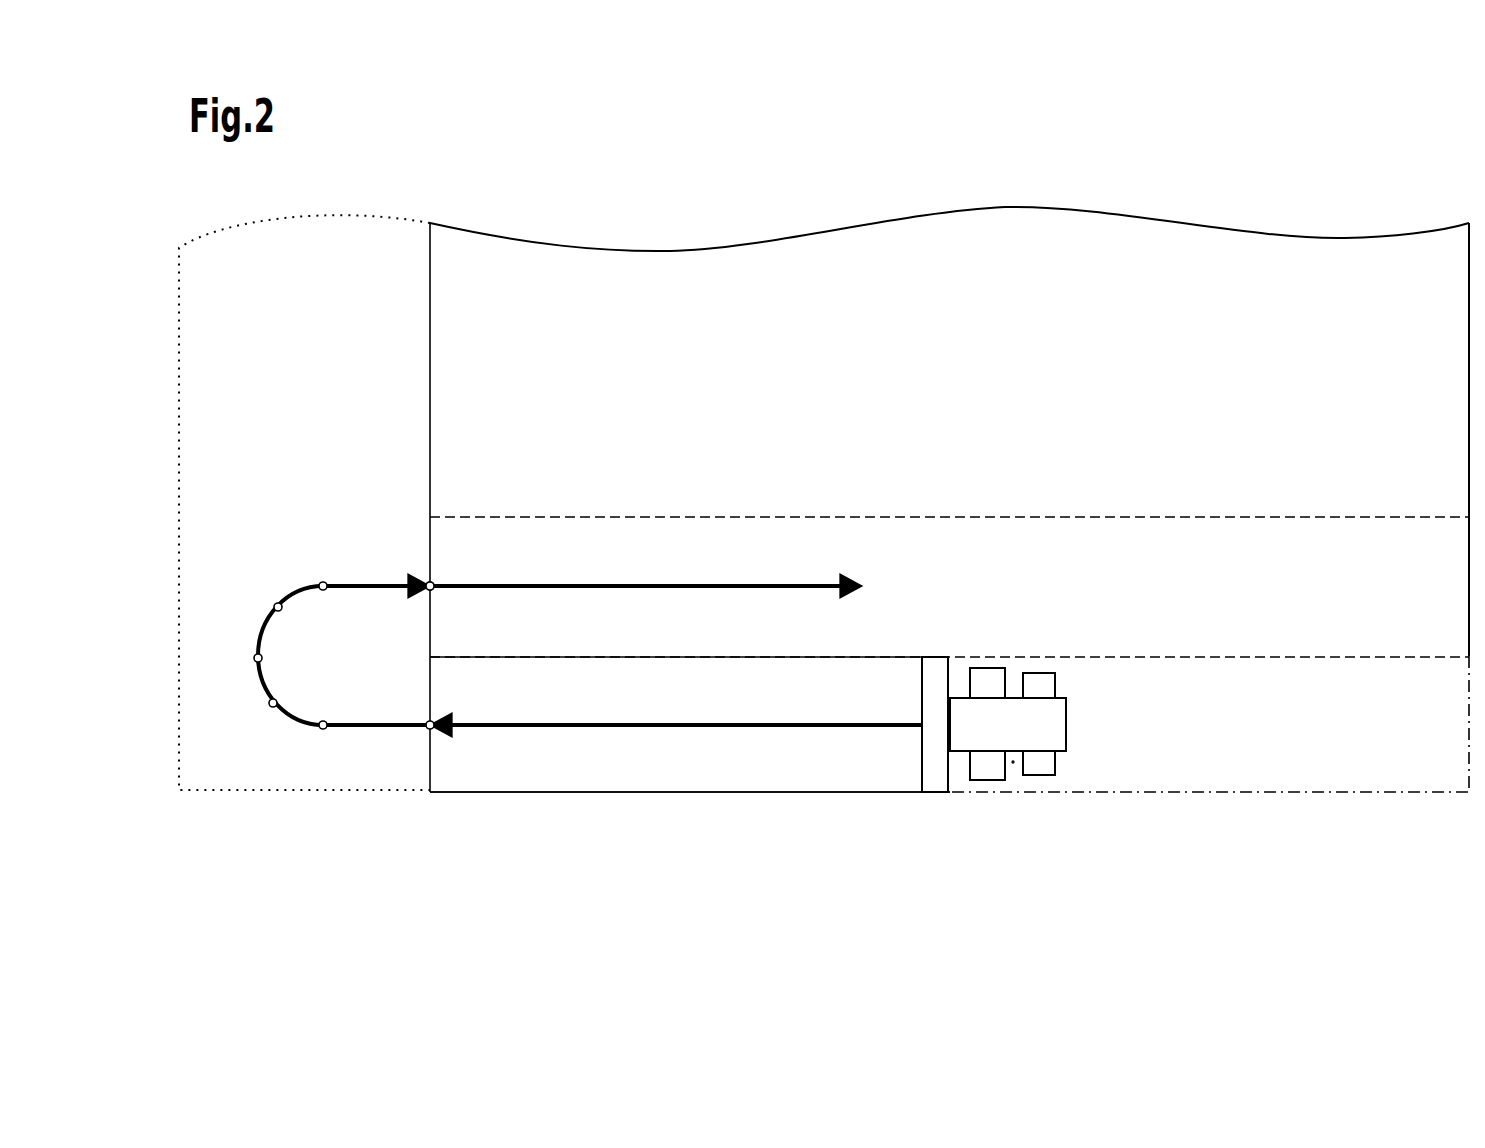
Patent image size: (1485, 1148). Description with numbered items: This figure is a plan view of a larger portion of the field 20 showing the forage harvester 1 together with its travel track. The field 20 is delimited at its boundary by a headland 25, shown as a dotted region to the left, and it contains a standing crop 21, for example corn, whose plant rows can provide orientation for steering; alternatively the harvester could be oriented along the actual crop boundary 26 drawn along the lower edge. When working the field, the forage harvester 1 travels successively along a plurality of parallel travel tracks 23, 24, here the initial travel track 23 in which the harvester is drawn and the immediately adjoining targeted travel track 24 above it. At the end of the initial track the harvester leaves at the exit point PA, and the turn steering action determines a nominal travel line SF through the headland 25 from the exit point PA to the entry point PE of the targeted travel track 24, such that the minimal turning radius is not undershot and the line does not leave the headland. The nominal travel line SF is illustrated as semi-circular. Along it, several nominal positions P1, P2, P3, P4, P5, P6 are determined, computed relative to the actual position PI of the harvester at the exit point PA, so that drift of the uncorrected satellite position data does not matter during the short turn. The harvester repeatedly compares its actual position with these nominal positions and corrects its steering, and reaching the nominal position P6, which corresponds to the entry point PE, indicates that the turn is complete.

The forage harvester 1 is at (1014, 736).
The field 20 is at (1133, 795).
The crop 21 is at (913, 419).
The travel track 23 is at (715, 714).
The travel track 24 is at (715, 632).
The headland 25 is at (337, 792).
The crop boundary 26 is at (690, 802).
The nominal travel line SF is at (338, 746).
The actual position PI is at (1013, 772).
The exit point PA is at (429, 730).
The entry point PE is at (429, 582).
The nominal position P1 is at (319, 730).
The nominal position P2 is at (270, 707).
The nominal position P3 is at (255, 657).
The nominal position P4 is at (275, 604).
The nominal position P5 is at (321, 582).
The nominal position P6 is at (430, 586).